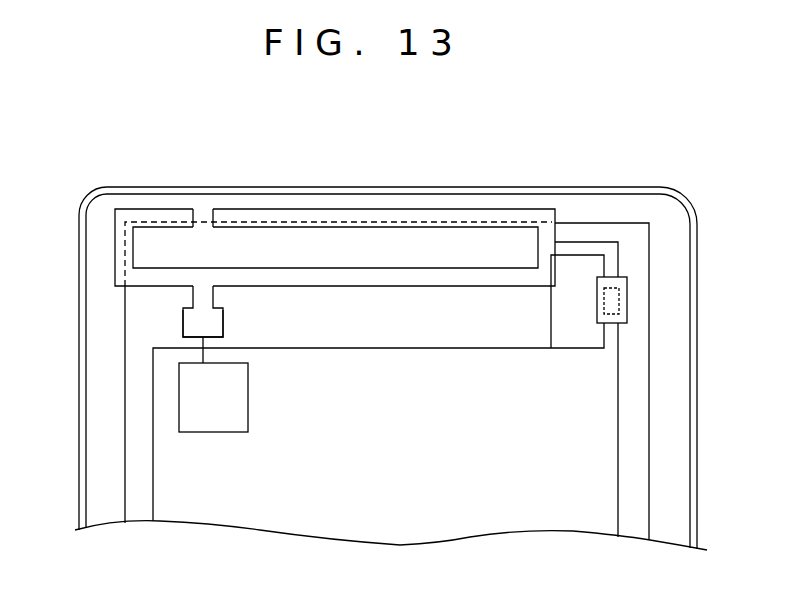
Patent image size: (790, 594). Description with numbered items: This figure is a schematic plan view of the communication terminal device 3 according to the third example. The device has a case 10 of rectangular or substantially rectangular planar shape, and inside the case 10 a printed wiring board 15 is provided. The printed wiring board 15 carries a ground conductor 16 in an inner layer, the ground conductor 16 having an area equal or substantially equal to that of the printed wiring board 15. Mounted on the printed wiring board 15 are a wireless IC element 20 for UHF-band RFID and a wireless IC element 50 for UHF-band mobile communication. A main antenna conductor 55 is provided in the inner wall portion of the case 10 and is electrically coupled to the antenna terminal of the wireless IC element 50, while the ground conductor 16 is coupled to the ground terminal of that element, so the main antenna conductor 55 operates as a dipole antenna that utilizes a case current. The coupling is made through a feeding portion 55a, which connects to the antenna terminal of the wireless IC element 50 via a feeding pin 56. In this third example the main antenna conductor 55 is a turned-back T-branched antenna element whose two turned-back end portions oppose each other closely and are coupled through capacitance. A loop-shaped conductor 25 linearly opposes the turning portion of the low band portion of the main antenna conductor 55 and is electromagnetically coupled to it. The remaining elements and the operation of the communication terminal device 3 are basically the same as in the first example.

The communication terminal device 3 is at (160, 137).
The case 10 is at (697, 340).
The printed wiring board 15 is at (650, 393).
The ground conductor 16 is at (603, 450).
The wireless IC element for UHF-band RFID 20 is at (627, 298).
The loop-shaped conductor 25 is at (545, 318).
The wireless IC element for UHF-band mobile communication 50 is at (212, 432).
The main antenna conductor 55 is at (409, 287).
The feeding portion 55a is at (225, 322).
The feeding pin 56 is at (200, 354).